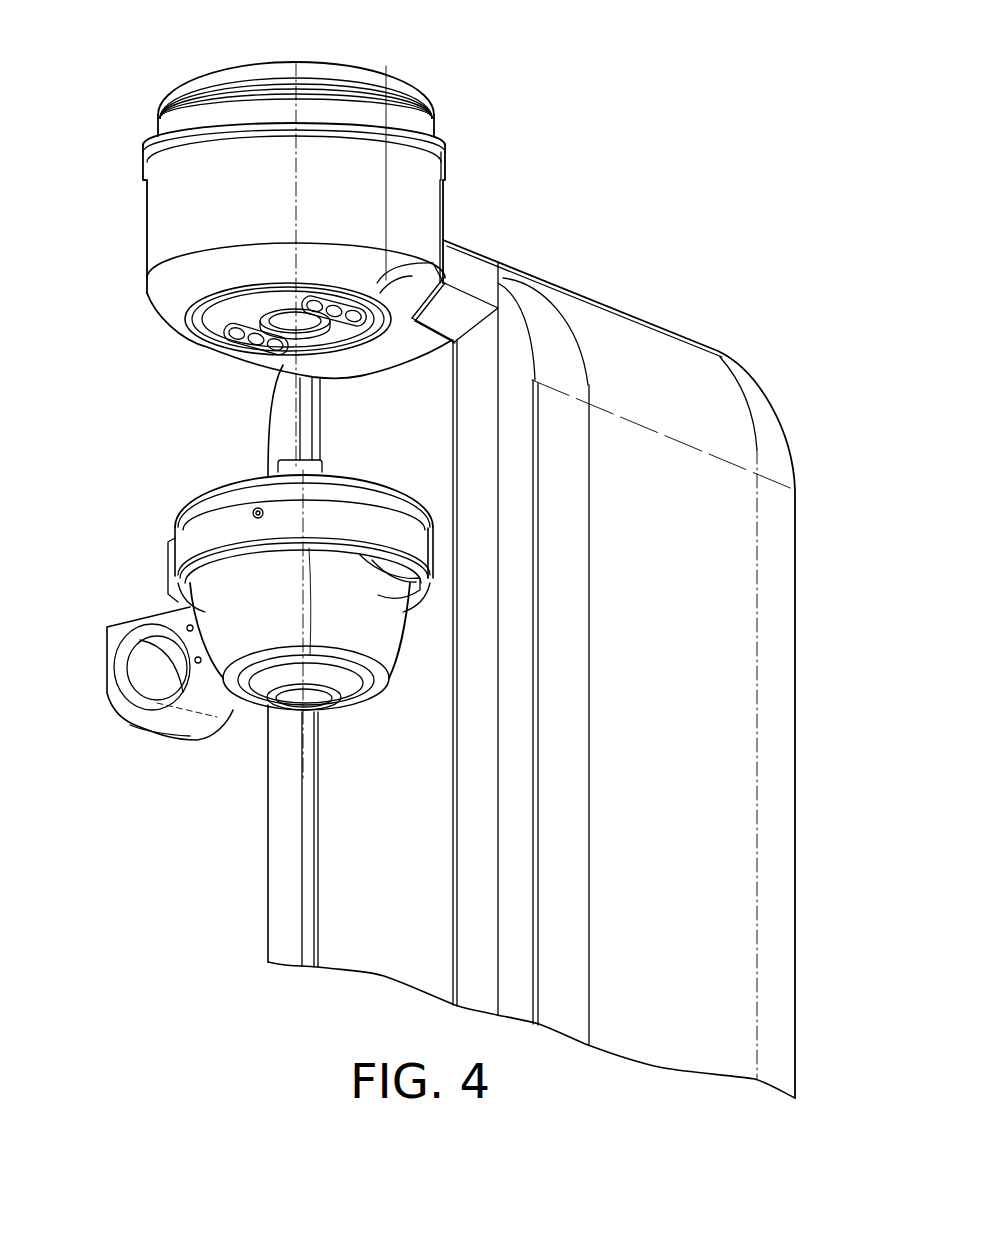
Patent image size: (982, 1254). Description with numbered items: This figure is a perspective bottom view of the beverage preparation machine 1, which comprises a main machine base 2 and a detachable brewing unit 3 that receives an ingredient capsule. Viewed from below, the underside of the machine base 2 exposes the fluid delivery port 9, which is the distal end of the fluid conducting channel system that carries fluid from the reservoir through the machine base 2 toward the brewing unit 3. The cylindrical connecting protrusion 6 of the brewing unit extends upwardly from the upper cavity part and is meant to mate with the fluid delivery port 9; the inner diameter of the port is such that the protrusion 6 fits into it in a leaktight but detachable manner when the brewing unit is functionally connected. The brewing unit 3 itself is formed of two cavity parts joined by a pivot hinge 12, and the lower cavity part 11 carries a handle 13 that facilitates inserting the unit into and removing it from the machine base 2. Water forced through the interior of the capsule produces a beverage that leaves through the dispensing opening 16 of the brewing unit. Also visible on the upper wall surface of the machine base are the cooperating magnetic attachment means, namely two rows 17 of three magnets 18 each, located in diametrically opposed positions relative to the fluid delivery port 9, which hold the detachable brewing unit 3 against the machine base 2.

The beverage preparation machine 1 is at (452, 580).
The main machine base 2 is at (692, 573).
The detachable brewing unit 3 is at (170, 565).
The cylindrical connecting protrusion 6 is at (282, 461).
The fluid delivery port 9 is at (283, 320).
The lower cavity part 11 is at (377, 633).
The pivot hinge 12 is at (200, 527).
The handle 13 is at (122, 680).
The dispensing opening 16 is at (302, 699).
The rows of magnets 17 is at (219, 342).
The magnets 18 is at (358, 319).